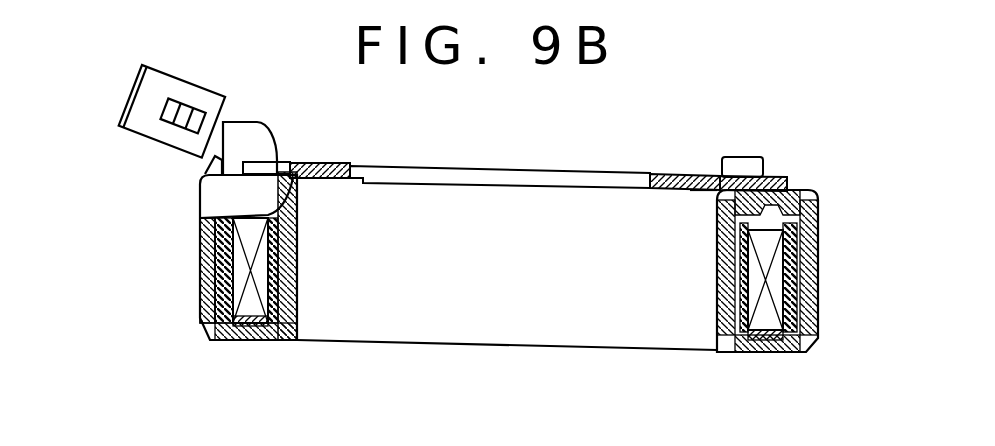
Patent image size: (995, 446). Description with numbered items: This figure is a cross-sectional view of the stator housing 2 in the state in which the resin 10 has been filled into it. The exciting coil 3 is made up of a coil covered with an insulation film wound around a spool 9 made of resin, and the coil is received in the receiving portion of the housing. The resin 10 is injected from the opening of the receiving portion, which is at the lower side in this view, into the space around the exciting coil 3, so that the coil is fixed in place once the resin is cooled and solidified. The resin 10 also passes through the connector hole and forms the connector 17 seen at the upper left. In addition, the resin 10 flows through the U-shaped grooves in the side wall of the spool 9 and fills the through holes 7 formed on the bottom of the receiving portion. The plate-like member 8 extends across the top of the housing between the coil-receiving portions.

The stator housing 2 is at (198, 200).
The exciting coil 3 is at (210, 297).
The through holes 7 is at (775, 193).
The plate 8 is at (331, 164).
The spool 9 is at (295, 303).
The resin 10 is at (218, 267).
The connector 17 is at (158, 88).